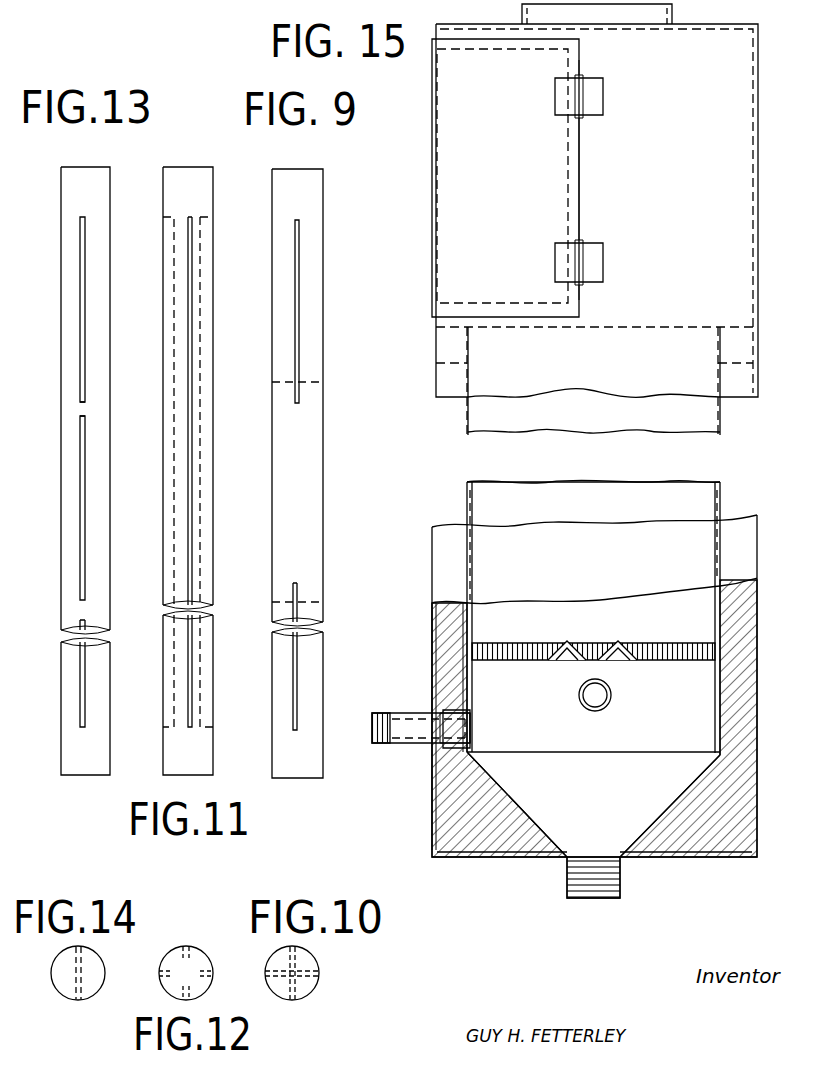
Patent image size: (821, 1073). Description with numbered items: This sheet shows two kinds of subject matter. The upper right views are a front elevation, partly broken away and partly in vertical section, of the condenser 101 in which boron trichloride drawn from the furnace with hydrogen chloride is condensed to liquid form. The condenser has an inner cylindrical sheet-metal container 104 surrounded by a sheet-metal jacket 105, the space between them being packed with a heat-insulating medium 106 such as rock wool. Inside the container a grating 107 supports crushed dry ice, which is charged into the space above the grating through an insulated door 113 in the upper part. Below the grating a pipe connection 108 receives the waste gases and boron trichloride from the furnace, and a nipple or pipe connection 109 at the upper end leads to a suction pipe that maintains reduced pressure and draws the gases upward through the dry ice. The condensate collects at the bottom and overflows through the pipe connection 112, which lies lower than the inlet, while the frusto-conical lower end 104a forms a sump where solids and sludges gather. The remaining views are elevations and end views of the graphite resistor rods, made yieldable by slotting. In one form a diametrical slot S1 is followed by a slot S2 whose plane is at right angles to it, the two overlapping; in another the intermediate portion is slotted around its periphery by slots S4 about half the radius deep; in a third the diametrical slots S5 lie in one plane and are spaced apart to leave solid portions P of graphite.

In FIG. 15, the condenser 101 is at (758, 392).
In FIG. 15, the nipple or pipe connection 109 is at (522, 13).
In FIG. 15, the insulated door 113 is at (440, 222).
In FIG. 15, the sheet-metal jacket 105 is at (750, 825).
In FIG. 15, the heat-insulating medium 106 is at (705, 900).
In FIG. 15, the grating 107 is at (432, 640).
In FIG. 15, the inner cylindrical sheet-metal container 104 is at (715, 708).
In FIG. 15, the frusto-conical sump 104a is at (527, 820).
In FIG. 15, the pipe connection 108 is at (586, 708).
In FIG. 15, the pipe connection 112 is at (400, 740).
In FIG. 9, the diametrical slot S1 is at (297, 298).
In FIG. 9, the diametrical slot S2 is at (285, 383).
In FIG. 10, the diametrical slot S2 is at (285, 977).
In FIG. 11, the peripheral slots S4 is at (175, 465).
In FIG. 12, the peripheral slots S4 is at (162, 968).
In FIG. 13, the diametrical slots S5 is at (80, 320).
In FIG. 14, the diametrical slots S5 is at (78, 1000).
In FIG. 13, the solid portions P is at (80, 407).